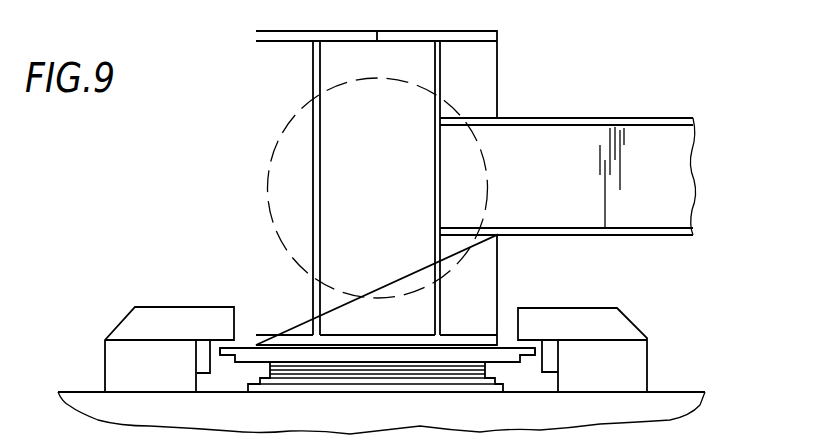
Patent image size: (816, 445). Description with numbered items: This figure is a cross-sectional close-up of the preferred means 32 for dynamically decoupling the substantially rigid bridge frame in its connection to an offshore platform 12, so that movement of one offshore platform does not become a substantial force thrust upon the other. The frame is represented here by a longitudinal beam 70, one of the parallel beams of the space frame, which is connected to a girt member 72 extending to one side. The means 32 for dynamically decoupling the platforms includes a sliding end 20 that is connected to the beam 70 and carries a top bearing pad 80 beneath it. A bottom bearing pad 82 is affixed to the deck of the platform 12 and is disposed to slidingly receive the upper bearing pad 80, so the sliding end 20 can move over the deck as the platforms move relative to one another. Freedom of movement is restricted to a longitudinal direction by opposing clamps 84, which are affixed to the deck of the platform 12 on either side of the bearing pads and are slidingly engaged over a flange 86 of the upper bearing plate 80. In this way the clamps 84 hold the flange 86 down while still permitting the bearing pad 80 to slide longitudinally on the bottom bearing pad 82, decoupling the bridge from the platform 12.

The offshore platform 12 is at (342, 425).
The sliding end 20 is at (228, 238).
The means for dynamically decoupling 32 is at (217, 177).
The longitudinal beam 70 is at (458, 107).
The girt member 72 is at (638, 118).
The top bearing pad 80 is at (512, 366).
The bottom bearing pad 82 is at (500, 380).
The clamp 84 is at (147, 328).
The flange 86 is at (227, 348).